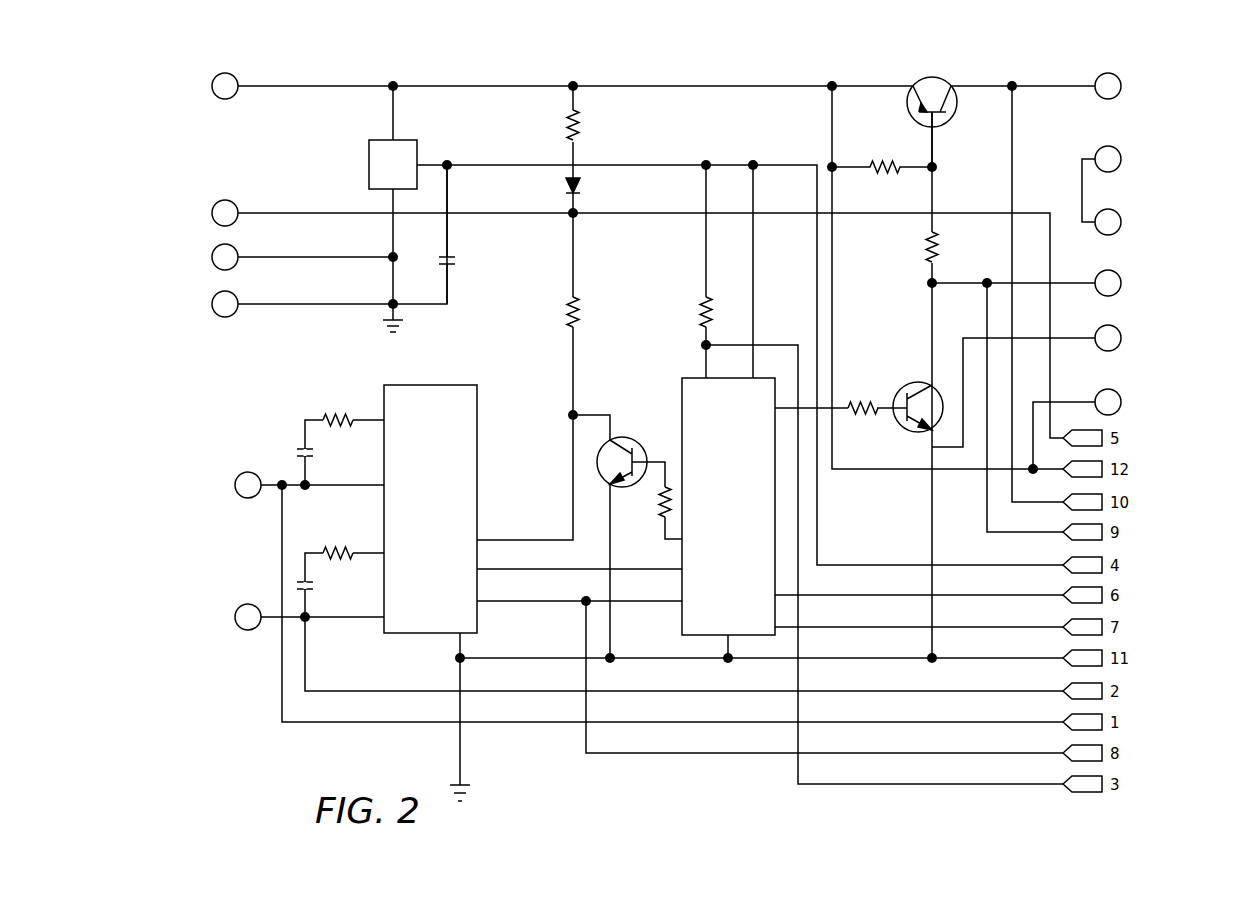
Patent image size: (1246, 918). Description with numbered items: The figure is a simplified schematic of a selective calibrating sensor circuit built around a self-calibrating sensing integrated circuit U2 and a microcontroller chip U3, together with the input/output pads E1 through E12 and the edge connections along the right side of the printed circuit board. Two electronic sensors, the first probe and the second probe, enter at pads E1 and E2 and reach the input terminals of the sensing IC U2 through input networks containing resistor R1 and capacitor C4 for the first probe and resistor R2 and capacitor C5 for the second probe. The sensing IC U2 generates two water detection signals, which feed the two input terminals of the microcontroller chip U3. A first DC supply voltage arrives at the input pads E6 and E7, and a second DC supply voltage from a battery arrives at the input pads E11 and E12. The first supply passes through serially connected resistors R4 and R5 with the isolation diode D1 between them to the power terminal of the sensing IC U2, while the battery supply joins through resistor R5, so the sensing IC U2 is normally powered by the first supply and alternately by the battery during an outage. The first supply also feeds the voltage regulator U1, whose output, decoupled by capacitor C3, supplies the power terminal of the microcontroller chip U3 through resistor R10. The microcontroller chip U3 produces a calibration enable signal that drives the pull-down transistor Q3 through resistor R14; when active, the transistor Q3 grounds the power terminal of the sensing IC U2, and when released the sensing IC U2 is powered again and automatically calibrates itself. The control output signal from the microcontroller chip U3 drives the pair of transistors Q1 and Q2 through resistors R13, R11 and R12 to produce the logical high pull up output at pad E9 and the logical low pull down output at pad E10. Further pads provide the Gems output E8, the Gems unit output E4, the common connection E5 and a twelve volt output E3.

The voltage regulator U1 is at (399, 165).
The self-calibrating sensing integrated circuit U2 is at (431, 520).
The microcontroller chip U3 is at (732, 506).
The resistor R1 is at (338, 409).
The resistor R2 is at (338, 542).
The resistor R4 is at (585, 125).
The resistor R5 is at (585, 312).
The resistor R10 is at (689, 312).
The resistor R11 is at (882, 158).
The resistor R12 is at (949, 247).
The resistor R13 is at (862, 396).
The resistor R14 is at (652, 512).
The capacitor C3 is at (460, 234).
The capacitor C4 is at (318, 453).
The capacitor C5 is at (318, 586).
The isolation diode D1 is at (586, 188).
The transistor Q1 is at (932, 113).
The transistor Q2 is at (915, 402).
The pull-down transistor Q3 is at (628, 456).
The input/output pad E1 is at (214, 485).
The input/output pad E2 is at (214, 617).
The input/output pad E3 is at (1160, 402).
The input/output pad E4 is at (1170, 222).
The input/output pad E5 is at (1144, 338).
The input pad E6 is at (190, 86).
The input pad E7 is at (194, 304).
The input/output pad E8 is at (1159, 159).
The input/output pad E9 is at (1163, 86).
The input/output pad E10 is at (1170, 283).
The input pad E11 is at (189, 213).
The input pad E12 is at (193, 257).